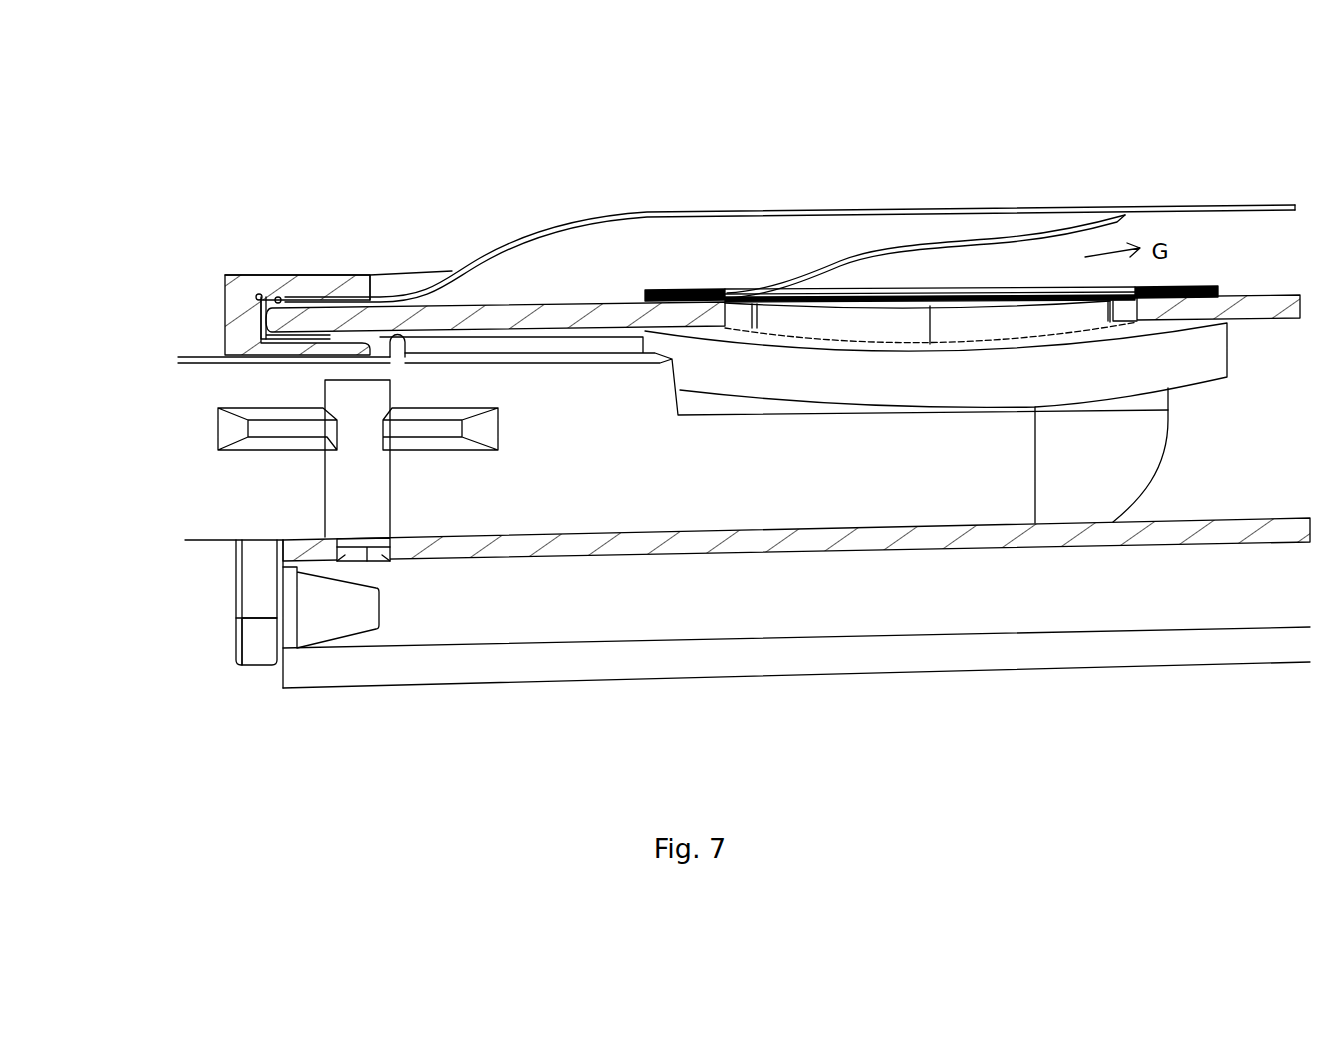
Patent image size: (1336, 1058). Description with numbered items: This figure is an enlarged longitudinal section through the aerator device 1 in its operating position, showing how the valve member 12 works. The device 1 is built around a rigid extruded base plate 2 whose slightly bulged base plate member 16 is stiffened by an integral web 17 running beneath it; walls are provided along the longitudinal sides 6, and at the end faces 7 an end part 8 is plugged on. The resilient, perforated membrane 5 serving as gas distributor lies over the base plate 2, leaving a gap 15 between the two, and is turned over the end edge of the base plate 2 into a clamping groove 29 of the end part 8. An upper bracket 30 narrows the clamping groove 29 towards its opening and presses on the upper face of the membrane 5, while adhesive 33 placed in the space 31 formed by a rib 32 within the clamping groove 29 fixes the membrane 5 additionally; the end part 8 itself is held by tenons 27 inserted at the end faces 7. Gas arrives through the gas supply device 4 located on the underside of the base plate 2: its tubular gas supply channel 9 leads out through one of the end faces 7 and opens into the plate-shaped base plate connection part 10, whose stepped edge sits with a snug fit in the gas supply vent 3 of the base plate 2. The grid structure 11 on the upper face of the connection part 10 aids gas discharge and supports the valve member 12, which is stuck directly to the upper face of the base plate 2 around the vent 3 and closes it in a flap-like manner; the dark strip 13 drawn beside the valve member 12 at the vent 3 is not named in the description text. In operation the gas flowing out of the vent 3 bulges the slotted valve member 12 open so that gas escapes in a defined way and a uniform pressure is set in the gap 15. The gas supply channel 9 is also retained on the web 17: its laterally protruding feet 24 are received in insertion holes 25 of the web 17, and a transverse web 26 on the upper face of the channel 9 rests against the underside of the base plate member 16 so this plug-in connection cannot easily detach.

The aerator device 1 is at (335, 168).
The base plate 2 is at (852, 658).
The gas supply vent 3 is at (1165, 287).
The gas supply device 4 is at (683, 488).
The membrane 5 is at (1196, 207).
The longitudinal sides 6 is at (1128, 598).
The end faces 7 is at (237, 627).
The end part 8 is at (233, 338).
The tubular gas supply channel 9 is at (538, 447).
The base plate connection part 10 is at (932, 388).
The grid structure 11 is at (1047, 296).
The valve member 12 is at (998, 240).
The seal 13 is at (684, 290).
The gap 15 is at (762, 243).
The base plate member 16 is at (530, 317).
The web 17 is at (613, 548).
The feet 24 is at (353, 492).
The insertion holes 25 is at (393, 562).
The transverse web 26 is at (395, 345).
The tenons 27 is at (332, 620).
The clamping groove 29 is at (283, 295).
The upper bracket 30 is at (330, 285).
The space 31 is at (257, 294).
The rib 32 is at (260, 318).
The adhesive 33 is at (262, 308).